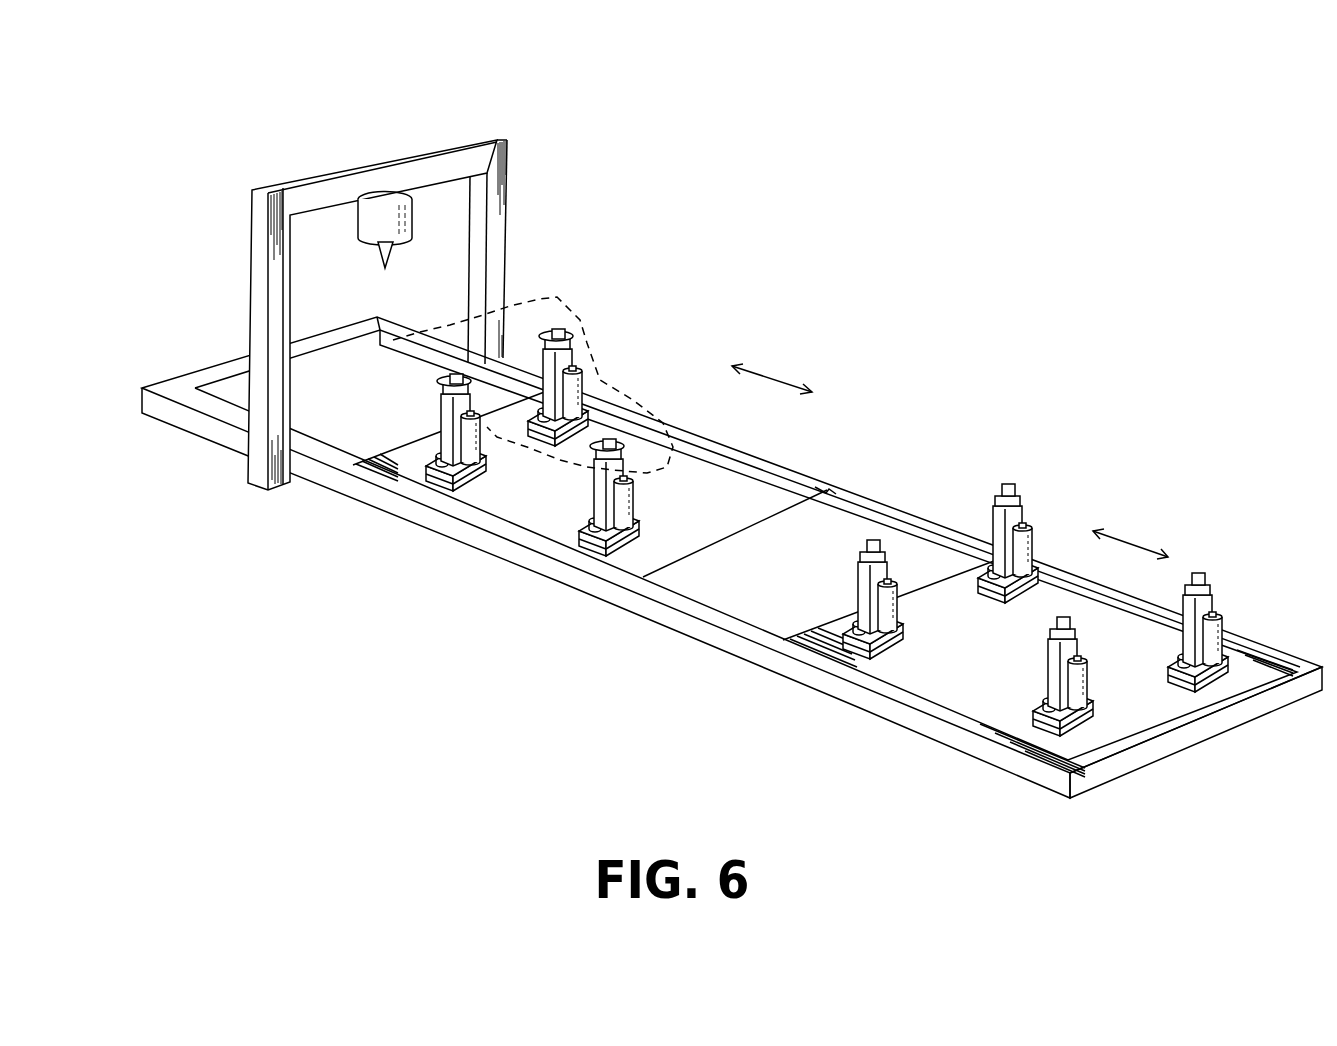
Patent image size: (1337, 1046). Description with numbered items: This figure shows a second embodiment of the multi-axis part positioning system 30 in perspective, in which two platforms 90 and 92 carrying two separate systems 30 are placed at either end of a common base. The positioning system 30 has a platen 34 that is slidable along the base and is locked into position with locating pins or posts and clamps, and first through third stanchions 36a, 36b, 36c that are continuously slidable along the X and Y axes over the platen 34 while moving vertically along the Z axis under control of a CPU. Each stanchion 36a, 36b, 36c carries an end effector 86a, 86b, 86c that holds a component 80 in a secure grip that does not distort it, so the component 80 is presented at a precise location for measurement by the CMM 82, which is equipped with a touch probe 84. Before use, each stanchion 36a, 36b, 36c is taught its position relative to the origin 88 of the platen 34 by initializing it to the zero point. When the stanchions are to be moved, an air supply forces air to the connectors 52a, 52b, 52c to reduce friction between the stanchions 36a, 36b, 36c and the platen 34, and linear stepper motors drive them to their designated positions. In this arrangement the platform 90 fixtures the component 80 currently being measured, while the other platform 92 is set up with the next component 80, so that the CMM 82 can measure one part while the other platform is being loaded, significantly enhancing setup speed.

The positioning system 30 is at (1010, 386).
The platen 34 is at (523, 490).
The first stanchion 36a is at (616, 350).
The second stanchion 36b is at (598, 563).
The third stanchion 36c is at (374, 459).
The connector 52a is at (481, 409).
The connector 52b is at (603, 553).
The connector 52c is at (397, 475).
The component 80 is at (454, 325).
The CMM 82 is at (407, 180).
The touch probe 84 is at (377, 267).
The end effector 86a is at (560, 327).
The end effector 86b is at (629, 447).
The end effector 86c is at (410, 370).
The origin 88 is at (829, 488).
The platform 90 is at (735, 535).
The platform 92 is at (1135, 712).